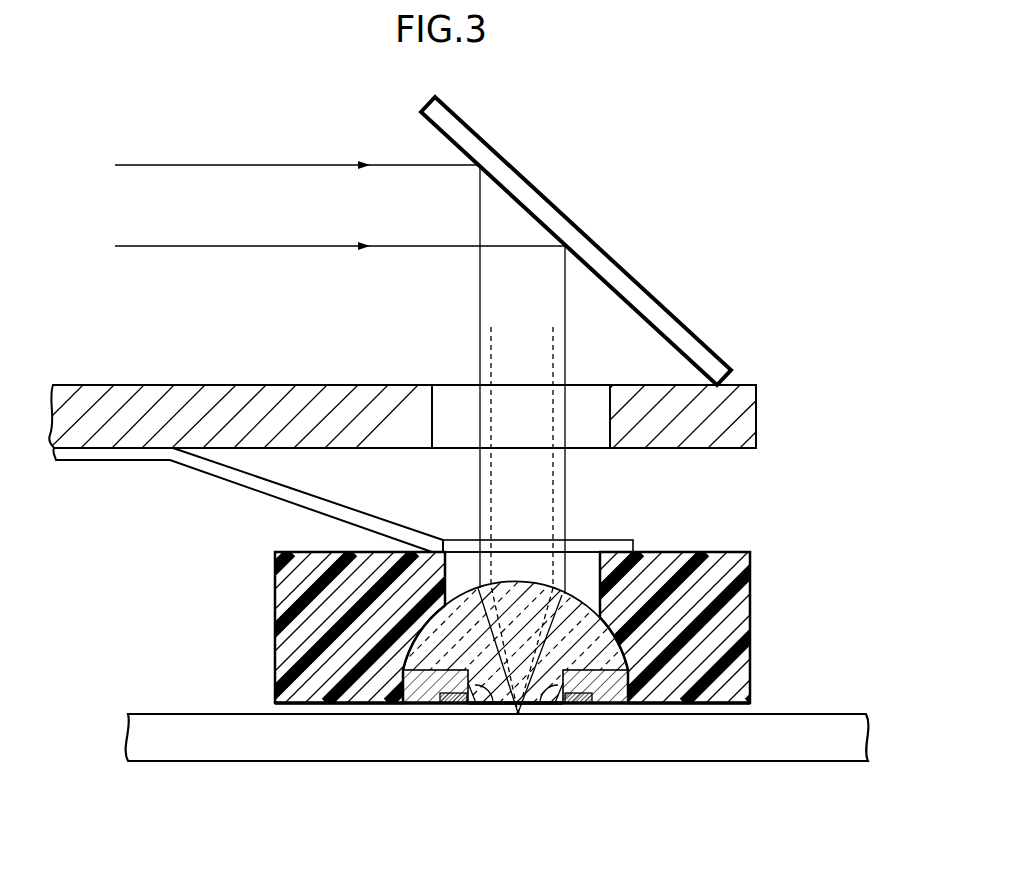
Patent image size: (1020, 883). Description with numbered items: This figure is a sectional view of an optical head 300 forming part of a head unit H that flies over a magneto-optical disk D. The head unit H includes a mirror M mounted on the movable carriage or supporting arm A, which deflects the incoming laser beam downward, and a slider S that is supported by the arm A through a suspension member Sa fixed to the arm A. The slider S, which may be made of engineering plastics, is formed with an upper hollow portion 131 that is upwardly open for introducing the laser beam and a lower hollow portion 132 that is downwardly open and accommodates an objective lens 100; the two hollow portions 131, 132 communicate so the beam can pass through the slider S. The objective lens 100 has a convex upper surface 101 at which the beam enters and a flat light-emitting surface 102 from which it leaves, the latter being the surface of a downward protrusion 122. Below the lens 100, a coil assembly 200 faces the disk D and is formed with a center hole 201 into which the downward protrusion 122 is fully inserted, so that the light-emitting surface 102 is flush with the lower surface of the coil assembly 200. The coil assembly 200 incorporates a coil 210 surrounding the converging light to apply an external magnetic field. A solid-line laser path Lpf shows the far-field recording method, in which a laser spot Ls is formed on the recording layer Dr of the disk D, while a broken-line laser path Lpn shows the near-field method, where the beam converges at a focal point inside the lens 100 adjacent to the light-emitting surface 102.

The mirror M is at (522, 175).
The head unit H is at (582, 241).
The arm A is at (133, 385).
The suspension member Sa is at (253, 483).
The optical head 300 is at (434, 434).
The slider S is at (541, 583).
The upper hollow portion 131 is at (460, 555).
The lower hollow portion 132 is at (433, 633).
The objective lens 100 is at (517, 590).
The convex upper surface 101 is at (517, 582).
The laser path Lpn is at (554, 364).
The laser path Lpf is at (566, 495).
The coil assembly 200 is at (468, 743).
The coil 210 is at (428, 692).
The center hole 201 is at (493, 703).
The laser spot Ls is at (519, 714).
The light-emitting surface 102 is at (544, 704).
The downward protrusion 122 is at (537, 692).
The magneto-optical disk D is at (497, 688).
The recording layer Dr is at (765, 713).